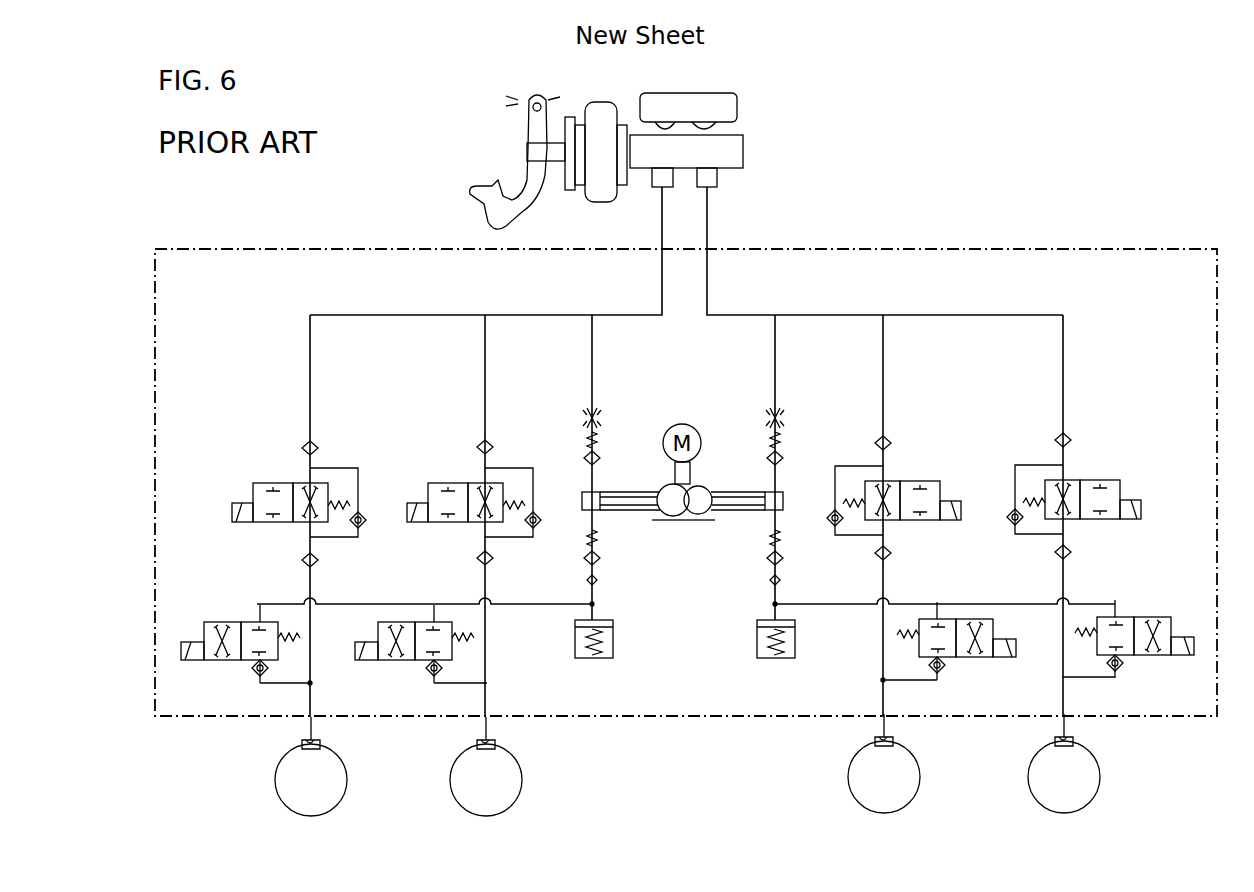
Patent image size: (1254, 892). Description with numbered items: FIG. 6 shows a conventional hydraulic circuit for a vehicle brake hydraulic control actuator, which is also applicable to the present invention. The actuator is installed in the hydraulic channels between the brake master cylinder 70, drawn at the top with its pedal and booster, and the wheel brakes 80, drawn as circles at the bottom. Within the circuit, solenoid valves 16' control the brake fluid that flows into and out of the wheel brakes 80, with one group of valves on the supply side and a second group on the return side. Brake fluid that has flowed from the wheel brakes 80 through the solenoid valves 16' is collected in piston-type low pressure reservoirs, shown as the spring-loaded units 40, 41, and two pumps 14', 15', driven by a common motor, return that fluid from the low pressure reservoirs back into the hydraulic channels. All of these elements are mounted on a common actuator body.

The brake master cylinder 70 is at (743, 142).
The solenoid valve 16' is at (681, 575).
The pump 14' is at (635, 483).
The pump 15' is at (733, 477).
The accumulator 40 is at (615, 633).
The accumulator 41 is at (754, 644).
The wheel brake 80 is at (687, 765).